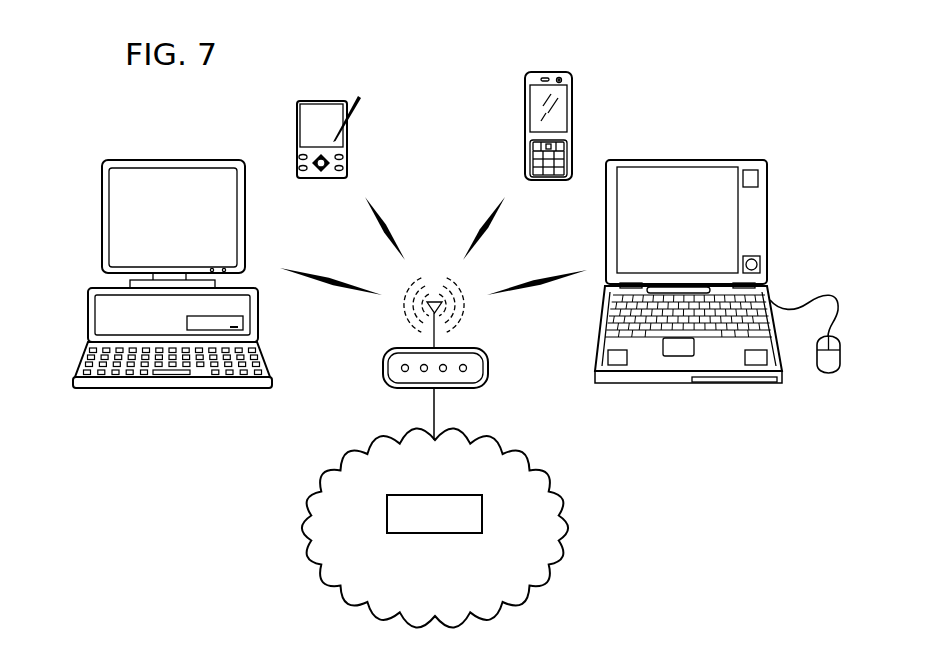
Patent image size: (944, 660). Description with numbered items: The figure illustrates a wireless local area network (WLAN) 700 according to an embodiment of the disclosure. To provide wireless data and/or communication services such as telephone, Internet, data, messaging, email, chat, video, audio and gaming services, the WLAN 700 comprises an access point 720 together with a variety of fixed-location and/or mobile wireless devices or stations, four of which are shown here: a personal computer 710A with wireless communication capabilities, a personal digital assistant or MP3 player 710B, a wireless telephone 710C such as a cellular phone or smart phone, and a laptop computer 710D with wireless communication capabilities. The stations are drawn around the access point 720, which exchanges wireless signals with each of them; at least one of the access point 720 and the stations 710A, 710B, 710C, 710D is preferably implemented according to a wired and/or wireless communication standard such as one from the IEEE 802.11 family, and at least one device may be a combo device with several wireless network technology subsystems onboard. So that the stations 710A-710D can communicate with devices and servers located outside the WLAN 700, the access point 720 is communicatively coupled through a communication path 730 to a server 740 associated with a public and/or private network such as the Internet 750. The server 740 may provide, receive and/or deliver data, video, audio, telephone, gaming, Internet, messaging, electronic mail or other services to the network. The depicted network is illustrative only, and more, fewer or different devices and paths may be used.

The wireless local area network 700 is at (718, 75).
The personal computer 710A is at (148, 158).
The personal digital assistant or MP3 player 710B is at (315, 102).
The wireless telephone 710C is at (552, 70).
The laptop computer 710D is at (697, 160).
The access point 720 is at (382, 368).
The communication path 730 is at (434, 407).
The server 740 is at (435, 533).
The Internet 750 is at (312, 544).